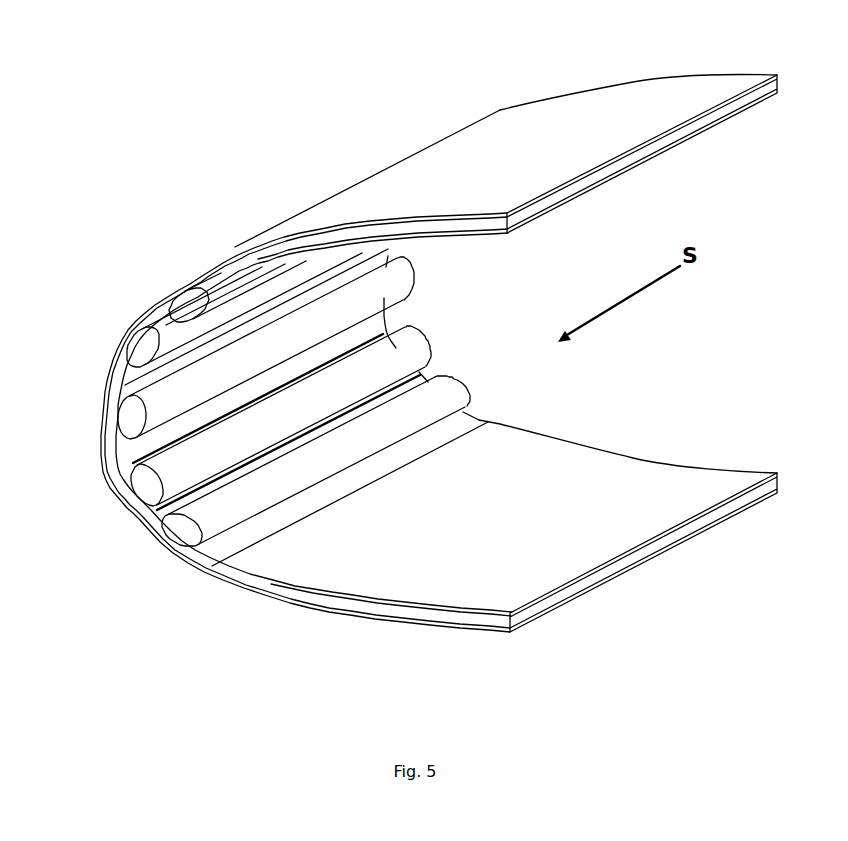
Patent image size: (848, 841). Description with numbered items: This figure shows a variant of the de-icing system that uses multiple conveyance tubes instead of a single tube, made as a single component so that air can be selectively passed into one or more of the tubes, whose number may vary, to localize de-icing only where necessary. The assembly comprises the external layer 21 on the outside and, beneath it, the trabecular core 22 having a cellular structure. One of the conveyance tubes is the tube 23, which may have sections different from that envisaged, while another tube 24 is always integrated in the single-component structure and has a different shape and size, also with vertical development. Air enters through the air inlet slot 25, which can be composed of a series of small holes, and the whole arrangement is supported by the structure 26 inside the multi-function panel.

The external layer 21 is at (588, 130).
The trabecular core 22 is at (293, 243).
The tube 23 is at (217, 300).
The tube 24 is at (163, 397).
The air inlet slot 25 is at (115, 420).
The structure 26 is at (280, 553).